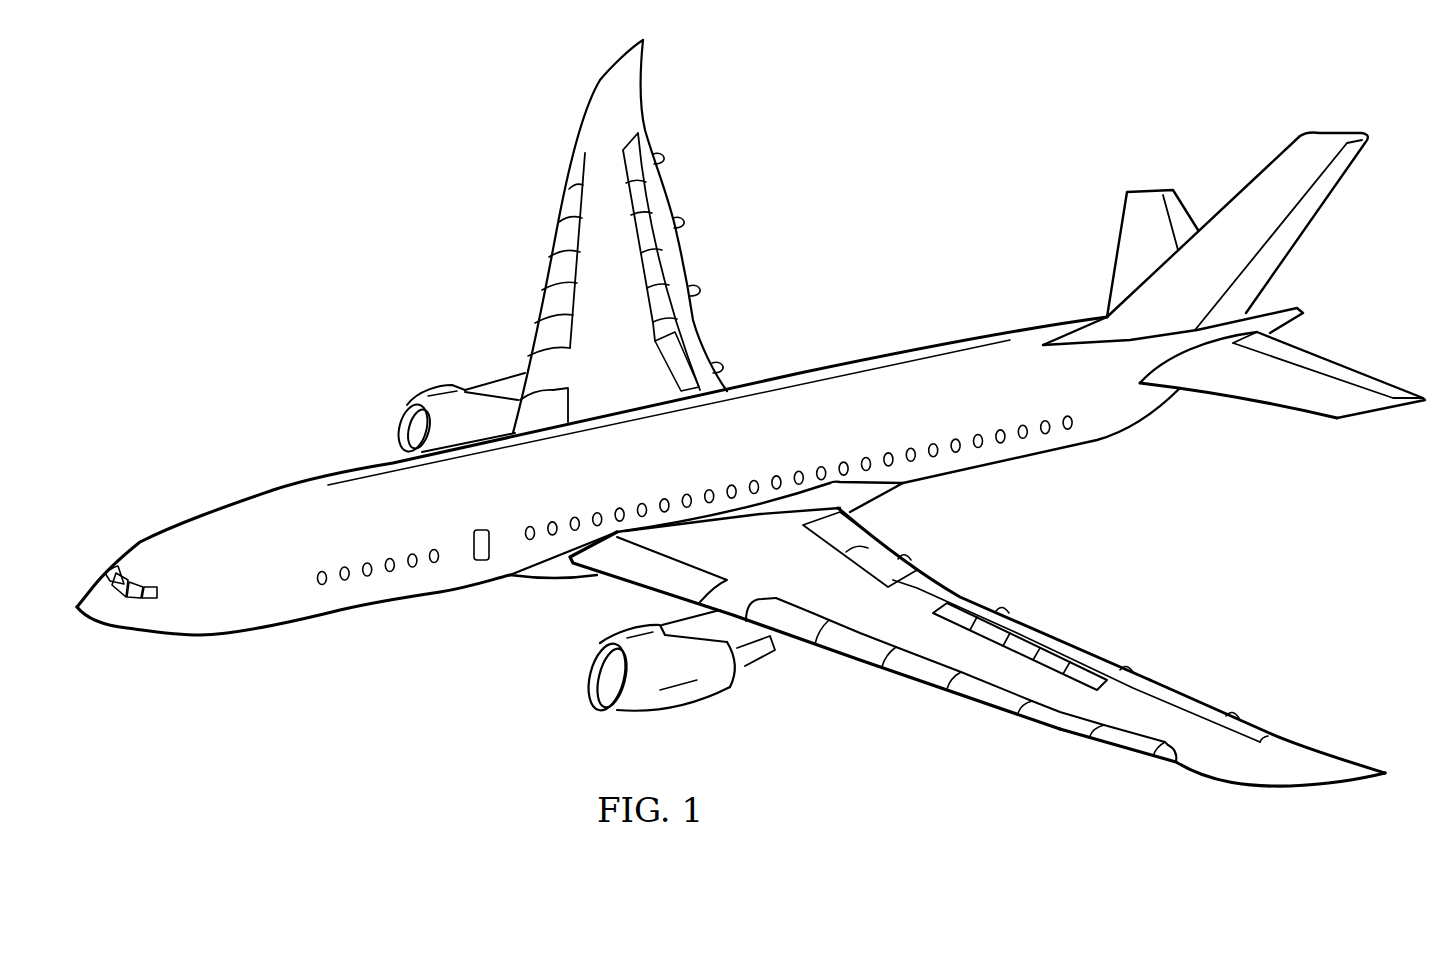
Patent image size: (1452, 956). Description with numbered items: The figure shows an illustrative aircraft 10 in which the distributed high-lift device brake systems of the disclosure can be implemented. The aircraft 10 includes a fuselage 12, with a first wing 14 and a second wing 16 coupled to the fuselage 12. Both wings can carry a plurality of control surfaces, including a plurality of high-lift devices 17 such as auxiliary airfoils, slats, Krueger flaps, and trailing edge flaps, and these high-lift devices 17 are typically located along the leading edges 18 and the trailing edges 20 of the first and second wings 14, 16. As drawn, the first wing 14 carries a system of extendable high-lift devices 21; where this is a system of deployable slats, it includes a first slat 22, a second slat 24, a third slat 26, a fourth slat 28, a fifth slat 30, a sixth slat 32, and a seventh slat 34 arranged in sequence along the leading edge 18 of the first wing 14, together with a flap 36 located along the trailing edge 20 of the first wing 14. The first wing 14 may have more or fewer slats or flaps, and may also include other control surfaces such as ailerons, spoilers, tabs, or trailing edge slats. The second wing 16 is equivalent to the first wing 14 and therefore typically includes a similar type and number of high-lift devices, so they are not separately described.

The aircraft 10 is at (751, 438).
The fuselage 12 is at (257, 501).
The first wing 14 is at (1094, 640).
The second wing 16 is at (611, 88).
The high-lift devices 17 is at (1173, 765).
The leading edge 18 is at (790, 650).
The trailing edge 20 is at (1183, 693).
The system of extendable high-lift devices 21 is at (977, 684).
The first slat 22 is at (645, 578).
The second slat 24 is at (802, 620).
The third slat 26 is at (857, 650).
The fourth slat 28 is at (927, 673).
The fifth slat 30 is at (993, 698).
The sixth slat 32 is at (1056, 727).
The seventh slat 34 is at (1130, 745).
The flap 36 is at (1065, 648).